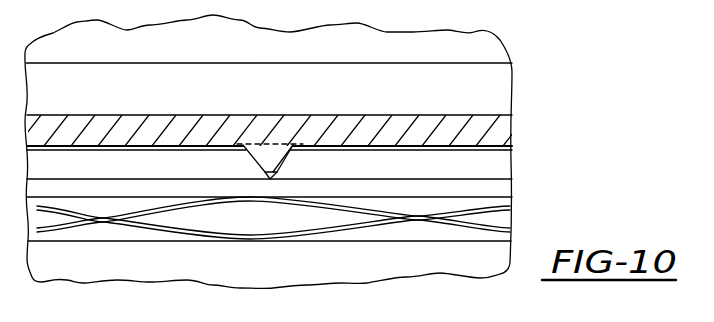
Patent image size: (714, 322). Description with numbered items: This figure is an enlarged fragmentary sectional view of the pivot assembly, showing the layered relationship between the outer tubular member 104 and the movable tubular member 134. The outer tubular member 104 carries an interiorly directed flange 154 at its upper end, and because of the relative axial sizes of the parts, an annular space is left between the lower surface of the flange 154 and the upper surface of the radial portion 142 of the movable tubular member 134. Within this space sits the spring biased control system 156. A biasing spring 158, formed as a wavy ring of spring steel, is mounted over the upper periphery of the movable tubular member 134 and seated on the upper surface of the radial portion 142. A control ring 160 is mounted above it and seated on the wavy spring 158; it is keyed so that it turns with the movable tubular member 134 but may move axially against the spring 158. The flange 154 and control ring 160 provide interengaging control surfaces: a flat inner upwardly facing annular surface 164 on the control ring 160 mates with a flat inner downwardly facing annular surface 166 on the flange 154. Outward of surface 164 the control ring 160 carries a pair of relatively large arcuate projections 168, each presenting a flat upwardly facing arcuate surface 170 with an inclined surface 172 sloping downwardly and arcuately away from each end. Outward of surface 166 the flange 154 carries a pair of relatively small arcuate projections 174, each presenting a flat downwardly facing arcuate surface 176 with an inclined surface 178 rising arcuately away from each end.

The outer tubular member 104 is at (502, 102).
The movable tubular member 134 is at (502, 52).
The radial portion 142 is at (134, 242).
The interiorly directed flange 154 is at (405, 118).
The spring biased control system 156 is at (516, 142).
The biasing spring 158 is at (347, 236).
The control ring 160 is at (512, 188).
The upwardly facing annular surface 164 is at (113, 145).
The downwardly facing annular surface 166 is at (195, 146).
The large arcuate projections 168 is at (372, 156).
The upwardly facing arcuate surface 170 is at (422, 149).
The inclined surface 172 is at (269, 179).
The small arcuate projections 174 is at (293, 146).
The downwardly facing arcuate surface 176 is at (269, 179).
The inclined surface 178 is at (243, 145).